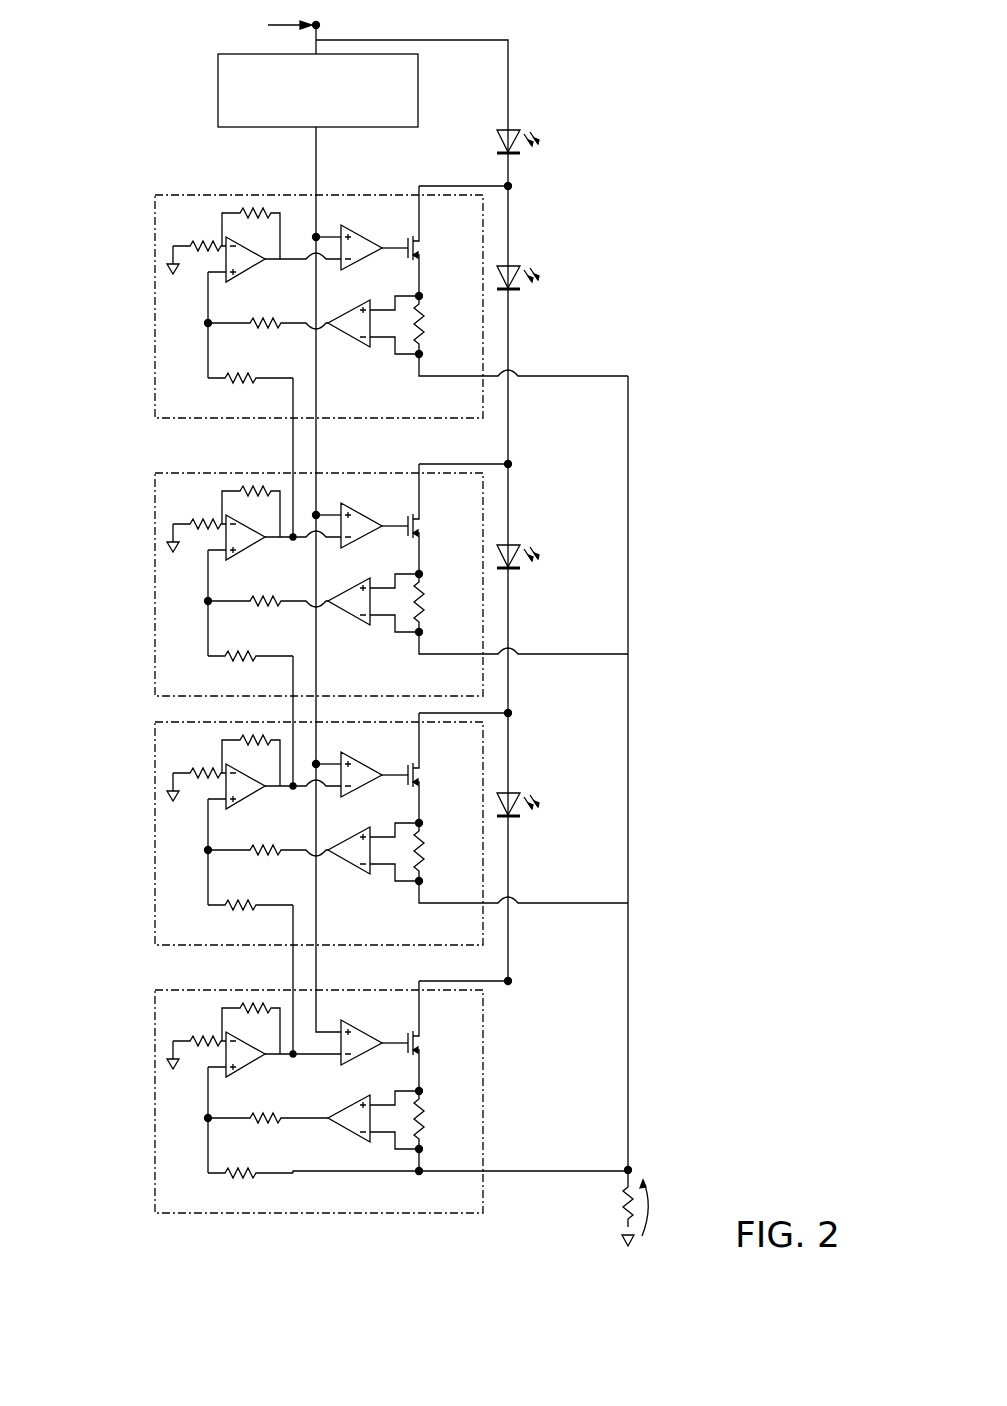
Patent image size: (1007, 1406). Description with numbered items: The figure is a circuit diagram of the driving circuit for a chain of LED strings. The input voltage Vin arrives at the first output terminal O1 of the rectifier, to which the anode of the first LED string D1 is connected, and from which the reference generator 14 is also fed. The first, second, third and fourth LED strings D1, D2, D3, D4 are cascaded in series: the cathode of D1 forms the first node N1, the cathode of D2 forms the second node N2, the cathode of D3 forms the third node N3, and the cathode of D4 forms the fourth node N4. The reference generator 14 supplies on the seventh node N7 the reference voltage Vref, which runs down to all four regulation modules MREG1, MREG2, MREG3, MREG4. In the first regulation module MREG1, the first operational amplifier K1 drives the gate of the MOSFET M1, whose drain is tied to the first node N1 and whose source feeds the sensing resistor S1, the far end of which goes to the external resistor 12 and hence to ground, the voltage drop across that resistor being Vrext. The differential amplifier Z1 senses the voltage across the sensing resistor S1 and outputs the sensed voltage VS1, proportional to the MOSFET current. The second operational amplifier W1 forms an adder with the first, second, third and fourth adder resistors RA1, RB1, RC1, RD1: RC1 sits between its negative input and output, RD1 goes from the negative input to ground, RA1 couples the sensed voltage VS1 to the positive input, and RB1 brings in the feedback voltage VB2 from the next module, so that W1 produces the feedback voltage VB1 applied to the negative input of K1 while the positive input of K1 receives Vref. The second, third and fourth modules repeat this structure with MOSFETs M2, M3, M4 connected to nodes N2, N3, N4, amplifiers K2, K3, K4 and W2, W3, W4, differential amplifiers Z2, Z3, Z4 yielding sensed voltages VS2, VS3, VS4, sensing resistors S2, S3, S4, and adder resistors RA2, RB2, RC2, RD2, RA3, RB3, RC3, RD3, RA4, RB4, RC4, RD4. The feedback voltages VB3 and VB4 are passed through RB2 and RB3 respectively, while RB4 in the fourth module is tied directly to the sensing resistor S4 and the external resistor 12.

The reference generator 14 is at (218, 72).
The external resistor 12 is at (618, 1200).
The input voltage Vin is at (275, 18).
The first output terminal O1 is at (319, 22).
The reference voltage Vref is at (334, 579).
The first LED string D1 is at (514, 130).
The second LED string D2 is at (514, 266).
The third LED string D3 is at (514, 545).
The fourth LED string D4 is at (514, 793).
The first node N1 is at (512, 186).
The second node N2 is at (512, 464).
The third node N3 is at (512, 713).
The fourth node N4 is at (512, 981).
The seventh node N7 is at (313, 237).
The first regulation module MREG1 is at (155, 263).
The second regulation module MREG2 is at (263, 584).
The third regulation module MREG3 is at (263, 833).
The fourth regulation module MREG4 is at (263, 1101).
The second operational amplifier W1 is at (253, 272).
The second operational amplifier W2 is at (283, 552).
The second operational amplifier W3 is at (283, 801).
The second operational amplifier W4 is at (283, 1069).
The first operational amplifier K1 is at (352, 236).
The first operational amplifier K2 is at (374, 515).
The first operational amplifier K3 is at (374, 764).
The first operational amplifier K4 is at (374, 1032).
The differential amplifier Z1 is at (348, 334).
The differential amplifier Z2 is at (351, 612).
The differential amplifier Z3 is at (351, 861).
The differential amplifier Z4 is at (351, 1129).
The MOSFET M1 is at (421, 252).
The MOSFET M2 is at (437, 519).
The MOSFET M3 is at (437, 768).
The MOSFET M4 is at (437, 1036).
The sensing resistor S1 is at (422, 320).
The sensing resistor S2 is at (438, 603).
The sensing resistor S3 is at (438, 852).
The sensing resistor S4 is at (438, 1120).
The first adder resistor RA1 is at (258, 330).
The first adder resistor RA2 is at (251, 618).
The first adder resistor RA3 is at (251, 867).
The first adder resistor RA4 is at (251, 1135).
The second adder resistor RB1 is at (236, 385).
The second adder resistor RB2 is at (250, 672).
The second adder resistor RB3 is at (250, 921).
The second adder resistor RB4 is at (250, 1189).
The third adder resistor RC1 is at (256, 210).
The third adder resistor RC2 is at (251, 492).
The third adder resistor RC3 is at (251, 741).
The third adder resistor RC4 is at (251, 1009).
The fourth adder resistor RD1 is at (204, 245).
The fourth adder resistor RD2 is at (196, 522).
The fourth adder resistor RD3 is at (196, 771).
The fourth adder resistor RD4 is at (196, 1039).
The feedback voltage VB1 is at (294, 280).
The feedback voltage VB2 is at (294, 558).
The feedback voltage VB3 is at (294, 807).
The feedback voltage VB4 is at (294, 1075).
The sensed voltage VS1 is at (321, 308).
The sensed voltage VS2 is at (321, 586).
The sensed voltage VS3 is at (321, 835).
The sensed voltage VS4 is at (321, 1103).
The voltage drop Vrext is at (667, 1208).